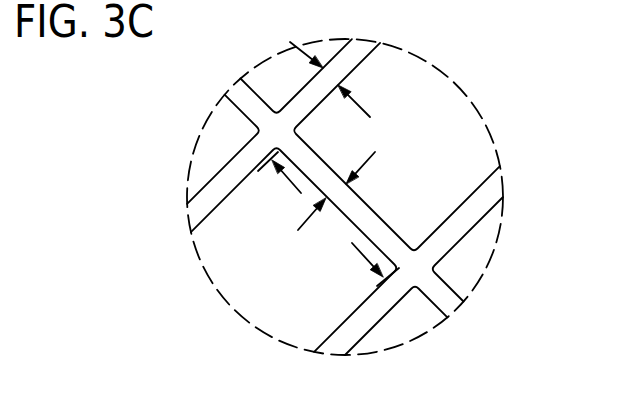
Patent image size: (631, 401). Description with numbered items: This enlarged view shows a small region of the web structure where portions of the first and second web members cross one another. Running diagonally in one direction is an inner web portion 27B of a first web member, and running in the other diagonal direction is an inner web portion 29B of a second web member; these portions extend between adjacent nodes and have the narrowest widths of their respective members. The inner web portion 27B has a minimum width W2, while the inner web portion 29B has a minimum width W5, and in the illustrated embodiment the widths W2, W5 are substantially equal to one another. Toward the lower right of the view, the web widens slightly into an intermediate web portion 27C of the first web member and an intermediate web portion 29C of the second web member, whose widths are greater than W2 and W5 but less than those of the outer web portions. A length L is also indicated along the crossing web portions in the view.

The inner web portion 27B is at (220, 187).
The inner web portion 29B is at (237, 107).
The intermediate web portion 27C is at (484, 203).
The intermediate web portion 29C is at (450, 291).
The minimum width of inner web portion W2 is at (319, 61).
The minimum width of inner web portion W5 is at (321, 210).
The intersection spacing length L is at (299, 191).